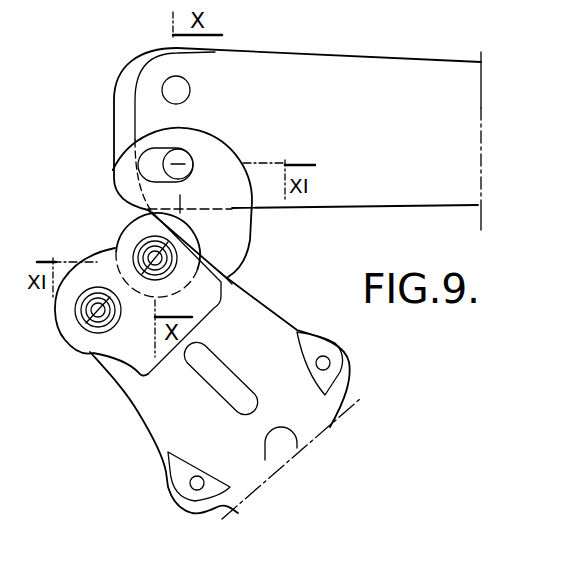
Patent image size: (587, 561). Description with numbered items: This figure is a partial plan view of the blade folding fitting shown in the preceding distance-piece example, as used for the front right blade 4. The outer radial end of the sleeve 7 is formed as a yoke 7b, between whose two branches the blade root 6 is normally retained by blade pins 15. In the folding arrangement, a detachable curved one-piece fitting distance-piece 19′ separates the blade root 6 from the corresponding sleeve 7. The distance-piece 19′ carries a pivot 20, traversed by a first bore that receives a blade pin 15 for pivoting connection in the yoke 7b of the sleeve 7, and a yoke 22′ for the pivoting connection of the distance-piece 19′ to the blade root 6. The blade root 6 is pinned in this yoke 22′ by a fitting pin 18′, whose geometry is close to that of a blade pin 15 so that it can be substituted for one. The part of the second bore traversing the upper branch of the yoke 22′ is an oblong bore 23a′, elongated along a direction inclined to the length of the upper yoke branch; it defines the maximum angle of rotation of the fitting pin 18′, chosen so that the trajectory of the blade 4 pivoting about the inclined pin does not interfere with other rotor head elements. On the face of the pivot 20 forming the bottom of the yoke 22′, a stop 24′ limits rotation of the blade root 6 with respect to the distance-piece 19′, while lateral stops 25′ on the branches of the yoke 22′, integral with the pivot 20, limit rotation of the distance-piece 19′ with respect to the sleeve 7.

The front right blade 4 is at (431, 58).
The blade root 6 is at (207, 100).
The sleeve 7 is at (308, 416).
The yoke 7b is at (137, 348).
The blade pin 15 is at (143, 243).
The fitting pin 18′ is at (170, 152).
The fitting distance-piece 19′ is at (262, 248).
The pivot 20 is at (108, 257).
The yoke 22′ is at (203, 161).
The oblong bore 23a′ is at (150, 167).
The stop 24′ is at (254, 210).
The stop 25′ is at (224, 268).